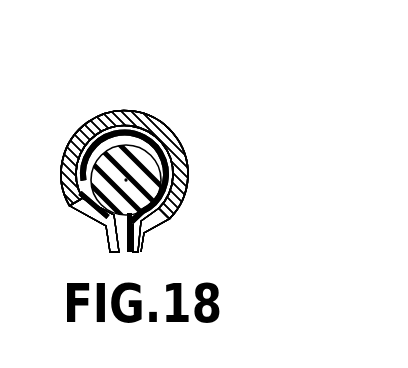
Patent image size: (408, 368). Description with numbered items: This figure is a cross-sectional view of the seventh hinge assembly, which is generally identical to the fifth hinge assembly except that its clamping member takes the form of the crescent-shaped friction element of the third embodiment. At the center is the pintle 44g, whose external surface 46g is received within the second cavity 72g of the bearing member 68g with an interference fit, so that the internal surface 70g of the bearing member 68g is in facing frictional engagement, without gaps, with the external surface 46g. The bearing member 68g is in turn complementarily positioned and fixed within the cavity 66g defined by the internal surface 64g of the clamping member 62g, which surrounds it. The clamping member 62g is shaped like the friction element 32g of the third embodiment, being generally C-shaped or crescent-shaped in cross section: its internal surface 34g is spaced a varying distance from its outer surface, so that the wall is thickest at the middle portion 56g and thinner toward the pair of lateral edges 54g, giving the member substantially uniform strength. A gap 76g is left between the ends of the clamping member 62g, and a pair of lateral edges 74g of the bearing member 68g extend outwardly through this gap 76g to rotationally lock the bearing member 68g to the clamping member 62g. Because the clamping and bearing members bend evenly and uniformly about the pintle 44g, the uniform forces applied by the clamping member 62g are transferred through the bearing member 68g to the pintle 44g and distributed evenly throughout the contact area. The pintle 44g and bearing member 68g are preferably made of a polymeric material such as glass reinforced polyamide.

The friction element 32g is at (93, 107).
The internal surface 34g is at (169, 170).
The pintle 44g is at (74, 204).
The external surface of the pintle 46g is at (158, 181).
The lateral edges 54g is at (84, 210).
The middle portion 56g is at (137, 114).
The clamping member 62g is at (67, 152).
The internal surface of the clamping member 64g is at (88, 124).
The cavity 66g is at (72, 180).
The bearing member 68g is at (141, 230).
The internal surface of the bearing member 70g is at (110, 221).
The second cavity 72g is at (143, 236).
The lateral edges of the bearing member 74g is at (129, 250).
The gap 76g is at (141, 233).